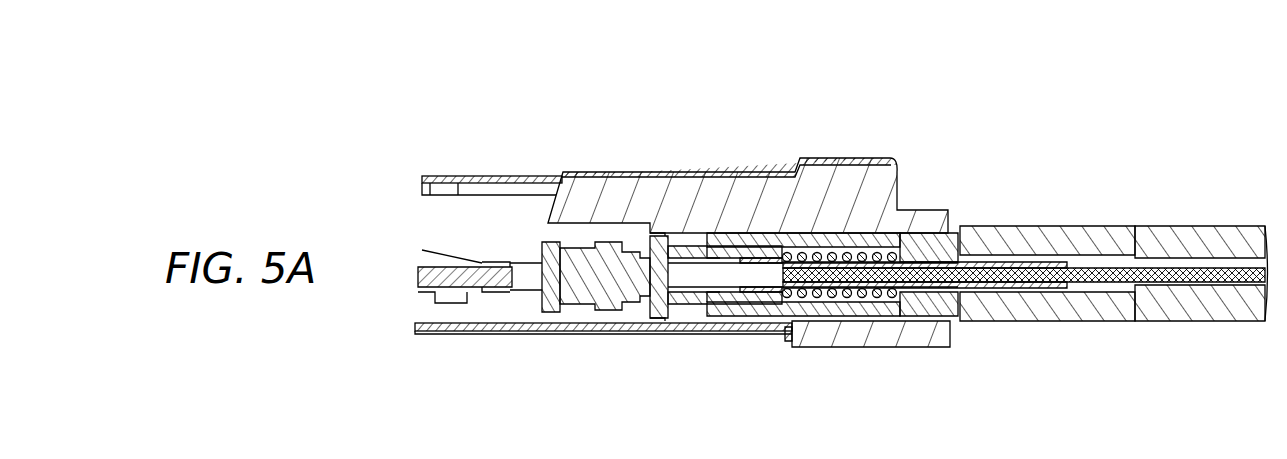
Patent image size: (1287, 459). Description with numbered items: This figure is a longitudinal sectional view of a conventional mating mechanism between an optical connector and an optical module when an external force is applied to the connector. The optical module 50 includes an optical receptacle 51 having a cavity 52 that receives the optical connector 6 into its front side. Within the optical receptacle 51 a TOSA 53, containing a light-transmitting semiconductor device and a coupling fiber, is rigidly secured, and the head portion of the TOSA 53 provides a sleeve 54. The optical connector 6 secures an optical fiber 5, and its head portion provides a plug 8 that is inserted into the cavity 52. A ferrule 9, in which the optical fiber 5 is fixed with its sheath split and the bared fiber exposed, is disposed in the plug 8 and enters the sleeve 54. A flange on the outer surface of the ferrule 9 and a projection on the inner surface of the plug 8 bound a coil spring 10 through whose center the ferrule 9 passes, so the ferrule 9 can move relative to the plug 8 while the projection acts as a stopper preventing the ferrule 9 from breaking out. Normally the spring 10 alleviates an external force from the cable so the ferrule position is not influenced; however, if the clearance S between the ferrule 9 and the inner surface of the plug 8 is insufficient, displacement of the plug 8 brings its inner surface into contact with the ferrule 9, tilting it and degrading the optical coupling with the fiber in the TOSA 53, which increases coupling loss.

The optical module 50 is at (508, 116).
The optical receptacle 51 is at (718, 186).
The cavity 52 is at (915, 235).
The TOSA 53 is at (618, 295).
The sleeve 54 is at (690, 325).
The ferrule 9 is at (750, 295).
The coil spring 10 is at (872, 290).
The optical fiber 5 is at (1024, 282).
The sleeve S is at (1032, 254).
The plug 8 is at (1112, 220).
The optical connector 6 is at (1114, 218).